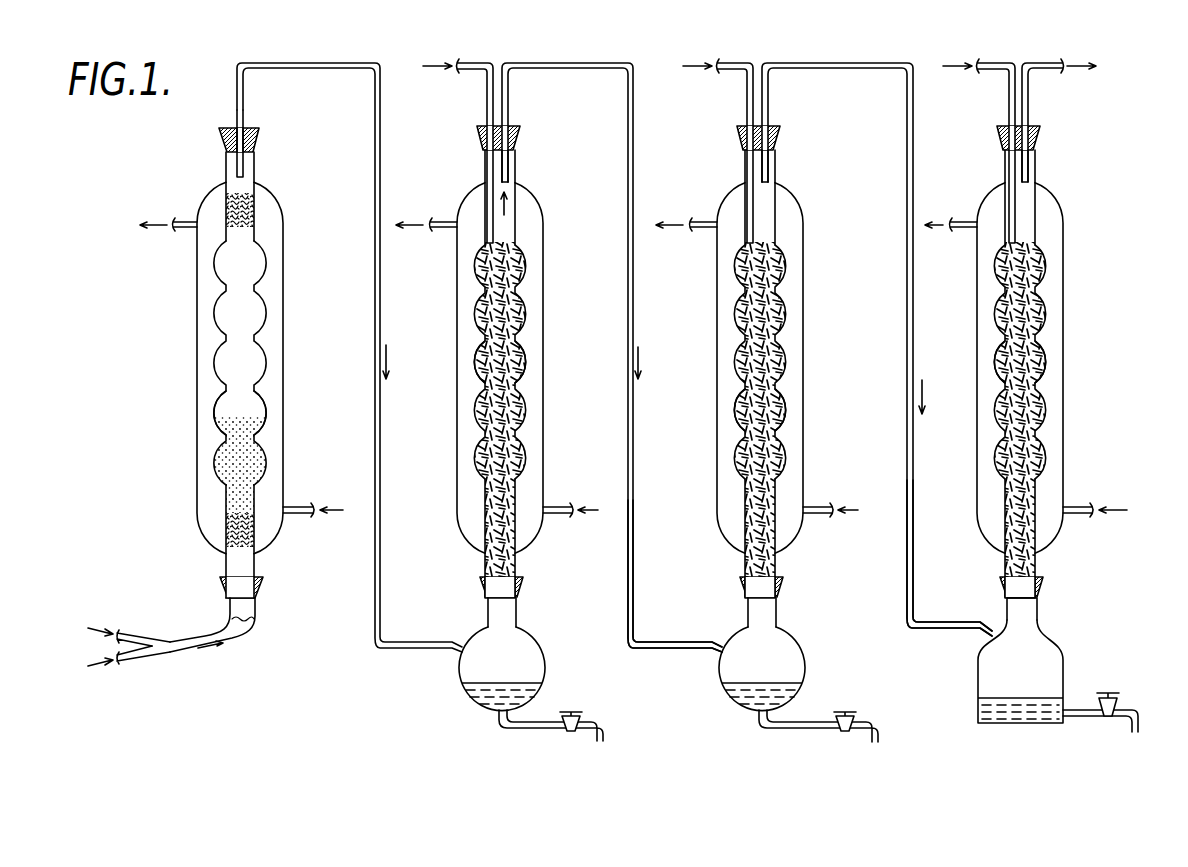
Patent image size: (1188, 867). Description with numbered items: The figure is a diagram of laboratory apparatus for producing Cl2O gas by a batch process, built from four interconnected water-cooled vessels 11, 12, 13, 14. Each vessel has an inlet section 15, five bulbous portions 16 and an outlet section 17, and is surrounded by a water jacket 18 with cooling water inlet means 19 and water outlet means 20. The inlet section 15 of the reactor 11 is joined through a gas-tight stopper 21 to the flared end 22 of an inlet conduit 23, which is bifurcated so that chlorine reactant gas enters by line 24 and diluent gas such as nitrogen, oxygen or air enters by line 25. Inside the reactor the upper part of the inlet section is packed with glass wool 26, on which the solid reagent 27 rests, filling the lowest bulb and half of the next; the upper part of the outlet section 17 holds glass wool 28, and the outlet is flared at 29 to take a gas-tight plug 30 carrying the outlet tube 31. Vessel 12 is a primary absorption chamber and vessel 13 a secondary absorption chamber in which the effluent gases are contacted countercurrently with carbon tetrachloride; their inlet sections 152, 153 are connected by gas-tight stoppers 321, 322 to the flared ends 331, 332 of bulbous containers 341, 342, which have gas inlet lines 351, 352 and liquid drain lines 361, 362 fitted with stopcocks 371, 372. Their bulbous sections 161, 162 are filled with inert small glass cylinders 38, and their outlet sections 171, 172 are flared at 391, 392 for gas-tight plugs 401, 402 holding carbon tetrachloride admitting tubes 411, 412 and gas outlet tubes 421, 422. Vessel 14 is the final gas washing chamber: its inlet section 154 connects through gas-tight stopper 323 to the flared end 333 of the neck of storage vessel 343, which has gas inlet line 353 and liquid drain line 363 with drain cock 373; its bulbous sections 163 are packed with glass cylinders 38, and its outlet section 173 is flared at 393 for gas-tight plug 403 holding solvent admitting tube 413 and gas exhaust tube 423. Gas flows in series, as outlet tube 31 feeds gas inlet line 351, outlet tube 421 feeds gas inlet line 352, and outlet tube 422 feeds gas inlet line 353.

The reactor vessel 11 is at (219, 351).
The primary absorption chamber 12 is at (523, 270).
The secondary absorption chamber 13 is at (783, 278).
The final gas washing chamber 14 is at (1046, 273).
The inlet section 15 is at (242, 565).
The bulbous portions 16 is at (260, 425).
The outlet section 17 is at (246, 165).
The water jacket 18 is at (283, 214).
The cooling water inlet means 19 is at (299, 505).
The water outlet means 20 is at (186, 222).
The gas-tight stopper 21 is at (260, 587).
The flared end 22 is at (228, 575).
The inlet conduit 23 is at (245, 625).
The reactant gas line 24 is at (132, 634).
The diluent gas line 25 is at (143, 656).
The glass wool 26 is at (232, 527).
The solid reagent 27 is at (226, 458).
The glass wool 28 is at (228, 202).
The flared outlet 29 is at (259, 134).
The gas-tight plug 30 is at (247, 128).
The outlet tube 31 is at (237, 90).
The small glass cylinders 38 is at (520, 320).
The inlet section 152 is at (520, 558).
The inlet section 153 is at (768, 560).
The inlet section 154 is at (1028, 558).
The bulbous sections 161 is at (522, 372).
The bulbous sections 162 is at (777, 401).
The bulbous sections 163 is at (1042, 364).
The outlet section 171 is at (508, 204).
The outlet section 172 is at (768, 196).
The outlet section 173 is at (1027, 200).
The gas-tight stopper 321 is at (521, 574).
The gas-tight stopper 322 is at (781, 574).
The gas-tight stopper 323 is at (1044, 574).
The flared end 331 is at (522, 590).
The flared end 332 is at (782, 590).
The flared end 333 is at (1043, 590).
The bulbous container 341 is at (530, 658).
The bulbous container 342 is at (790, 658).
The storage vessel 343 is at (1055, 663).
The gas inlet line 351 is at (415, 642).
The gas inlet line 352 is at (667, 642).
The gas inlet line 353 is at (950, 622).
The liquid drain line 361 is at (533, 727).
The liquid drain line 362 is at (803, 728).
The liquid drain line 363 is at (1092, 717).
The stopcock 371 is at (573, 730).
The stopcock 372 is at (843, 730).
The drain cock 373 is at (1108, 717).
The flared outlet 391 is at (518, 141).
The flared outlet 392 is at (777, 142).
The flared outlet 393 is at (1042, 139).
The gas-tight plug 401 is at (515, 121).
The gas-tight plug 402 is at (773, 120).
The gas-tight plug 403 is at (1037, 122).
The carbon tetrachloride admitting tube 411 is at (489, 100).
The carbon tetrachloride admitting tube 412 is at (750, 97).
The solvent admitting tube 413 is at (1012, 99).
The gas outlet tube 421 is at (509, 84).
The gas outlet tube 422 is at (769, 86).
The gas exhaust tube 423 is at (1030, 83).